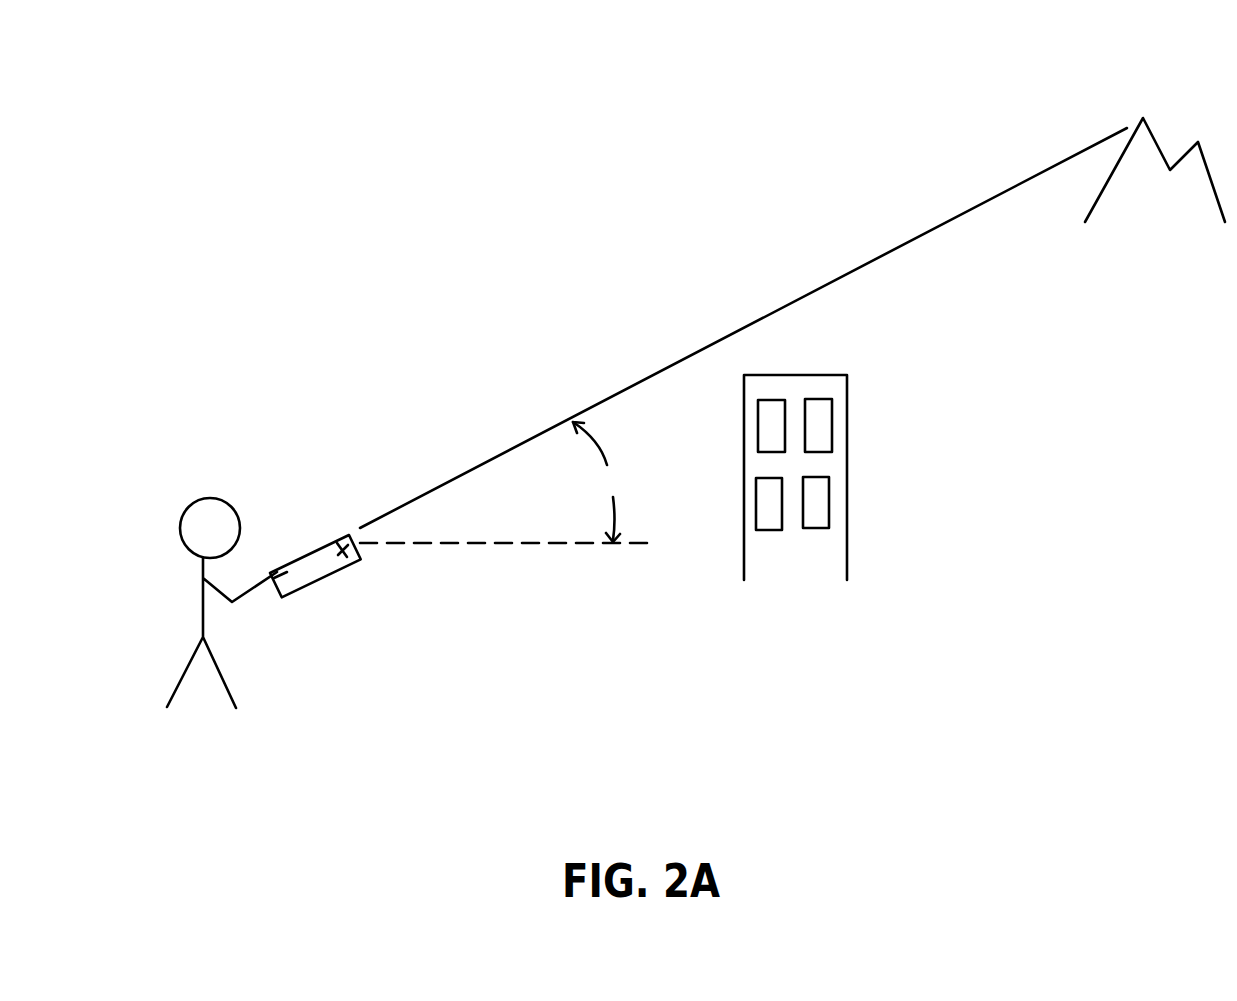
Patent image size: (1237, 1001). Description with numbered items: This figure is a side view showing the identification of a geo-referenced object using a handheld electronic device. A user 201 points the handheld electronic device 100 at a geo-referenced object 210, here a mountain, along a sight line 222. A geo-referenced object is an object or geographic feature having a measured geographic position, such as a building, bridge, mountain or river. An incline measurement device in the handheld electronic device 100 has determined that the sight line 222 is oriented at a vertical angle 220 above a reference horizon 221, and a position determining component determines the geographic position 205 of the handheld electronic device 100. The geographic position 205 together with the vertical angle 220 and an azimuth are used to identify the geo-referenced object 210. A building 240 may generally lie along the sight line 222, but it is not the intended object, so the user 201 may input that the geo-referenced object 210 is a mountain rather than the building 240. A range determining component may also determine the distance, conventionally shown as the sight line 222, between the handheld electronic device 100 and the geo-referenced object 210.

The handheld electronic device 100 is at (310, 577).
The user 201 is at (182, 540).
The geographic position 205 is at (332, 543).
The geo-referenced object 210 is at (1143, 118).
The vertical angle α 220 is at (618, 480).
The reference horizon 221 is at (477, 543).
The sight line 222 is at (853, 268).
The building 240 is at (847, 468).